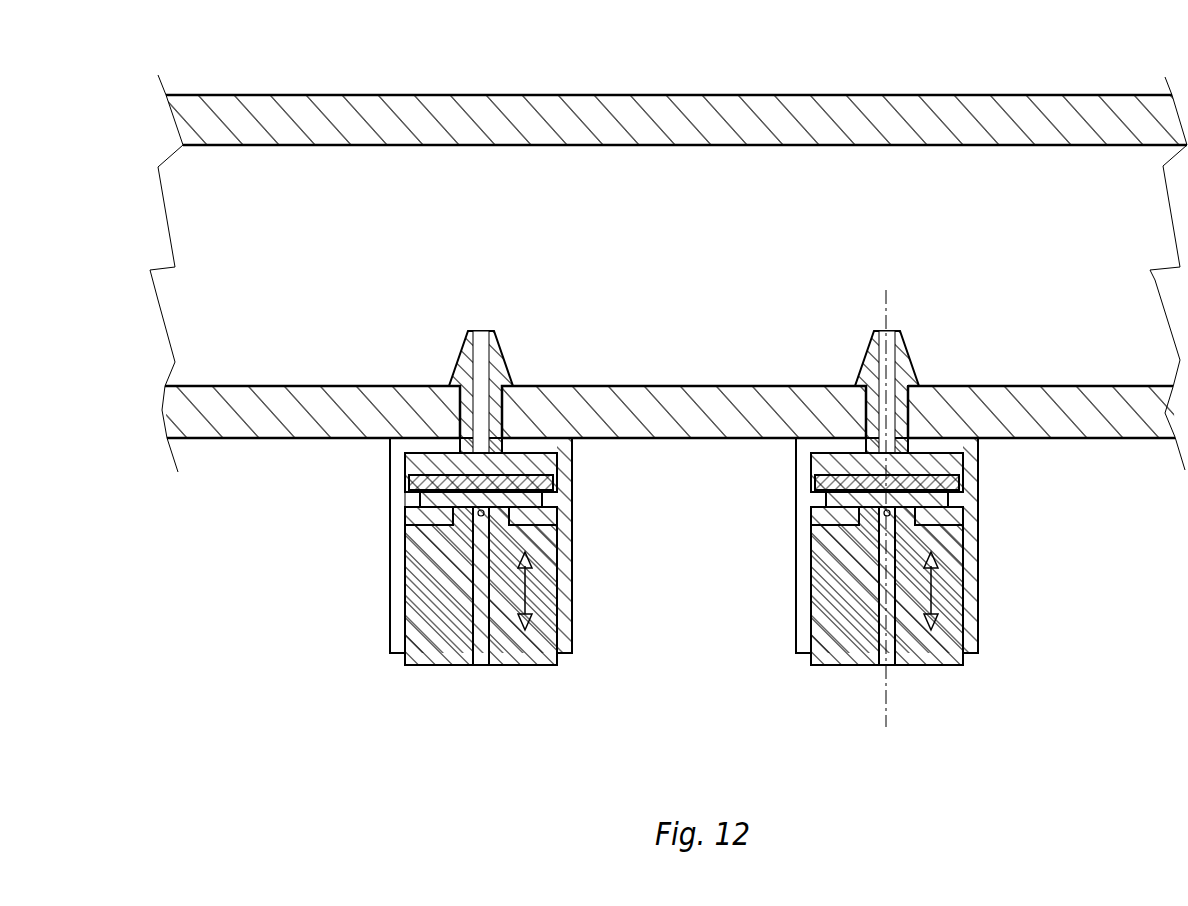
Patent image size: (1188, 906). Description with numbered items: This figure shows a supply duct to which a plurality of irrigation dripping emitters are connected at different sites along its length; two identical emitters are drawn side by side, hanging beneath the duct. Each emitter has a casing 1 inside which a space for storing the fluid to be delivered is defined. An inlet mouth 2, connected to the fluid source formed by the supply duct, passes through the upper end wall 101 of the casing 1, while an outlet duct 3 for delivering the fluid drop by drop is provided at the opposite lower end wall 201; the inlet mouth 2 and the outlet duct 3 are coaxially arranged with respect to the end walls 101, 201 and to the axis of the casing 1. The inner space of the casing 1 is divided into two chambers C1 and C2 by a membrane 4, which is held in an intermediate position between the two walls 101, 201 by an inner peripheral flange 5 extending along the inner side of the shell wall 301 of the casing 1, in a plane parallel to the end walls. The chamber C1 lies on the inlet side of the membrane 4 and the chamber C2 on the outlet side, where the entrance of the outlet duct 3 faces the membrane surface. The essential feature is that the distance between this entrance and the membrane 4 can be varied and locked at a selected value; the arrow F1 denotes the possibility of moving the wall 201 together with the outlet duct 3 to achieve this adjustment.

The casing 1 is at (377, 637).
The inlet mouth 2 is at (479, 331).
The outlet duct 3 is at (480, 665).
The membrane 4 is at (533, 477).
The inner peripheral flange 5 is at (413, 497).
The upper end wall 101 is at (547, 435).
The lower end wall 201 is at (530, 665).
The shell wall 301 is at (972, 545).
The first chamber C1 is at (428, 462).
The second chamber C2 is at (405, 530).
The arrow indicating wall movement F1 is at (543, 602).